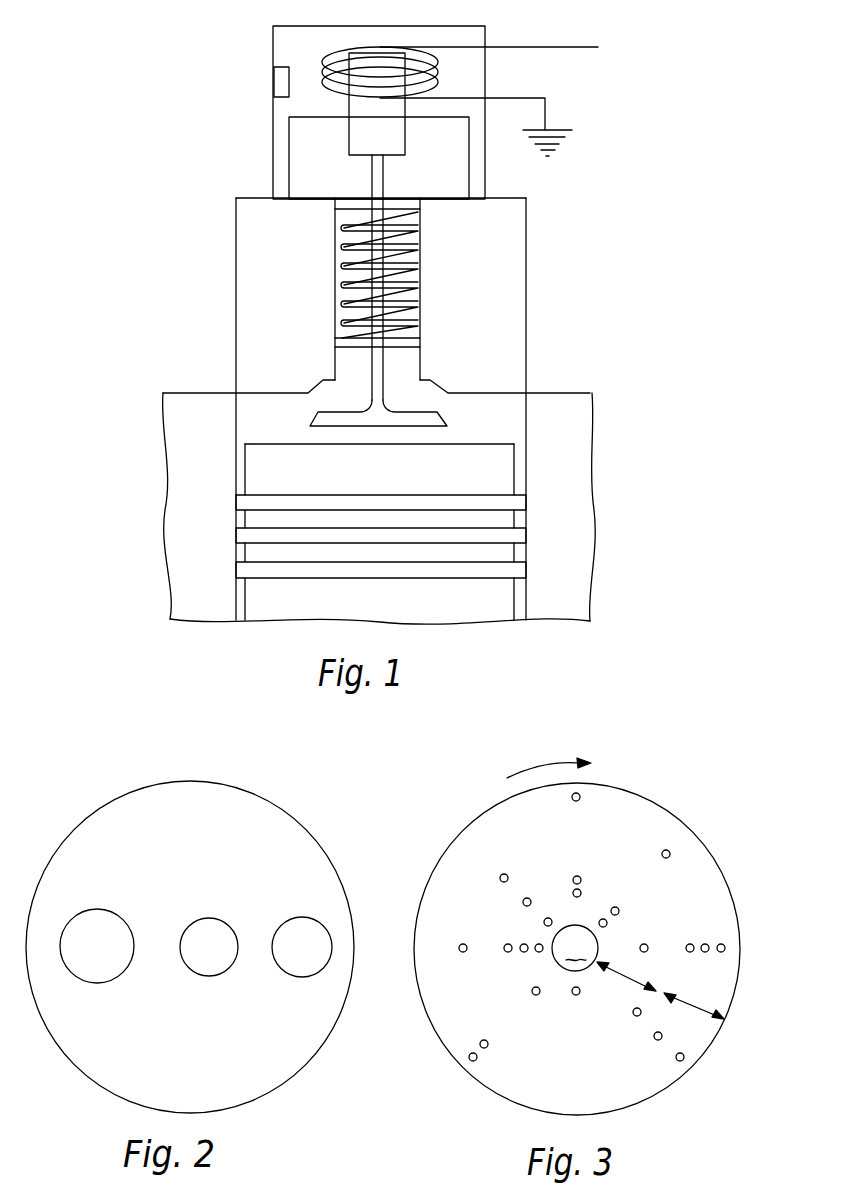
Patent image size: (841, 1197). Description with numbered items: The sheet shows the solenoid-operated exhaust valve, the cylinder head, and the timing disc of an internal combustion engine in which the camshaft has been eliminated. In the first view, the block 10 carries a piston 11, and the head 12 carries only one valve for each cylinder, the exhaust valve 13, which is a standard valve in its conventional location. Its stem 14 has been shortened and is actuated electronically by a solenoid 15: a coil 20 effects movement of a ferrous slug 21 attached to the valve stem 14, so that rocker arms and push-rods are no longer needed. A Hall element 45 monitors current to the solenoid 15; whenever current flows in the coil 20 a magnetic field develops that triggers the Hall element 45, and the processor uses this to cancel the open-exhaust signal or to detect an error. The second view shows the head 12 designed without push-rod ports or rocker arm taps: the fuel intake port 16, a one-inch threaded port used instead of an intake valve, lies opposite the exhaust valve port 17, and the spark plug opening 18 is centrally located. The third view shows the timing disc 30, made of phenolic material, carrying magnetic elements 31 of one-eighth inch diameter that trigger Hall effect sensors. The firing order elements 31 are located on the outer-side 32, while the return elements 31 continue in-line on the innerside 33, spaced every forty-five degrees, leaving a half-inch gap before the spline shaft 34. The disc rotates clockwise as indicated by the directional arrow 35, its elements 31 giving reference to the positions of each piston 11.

In FIG. 1, the block 10 is at (188, 507).
In FIG. 1, the piston 11 is at (318, 600).
In FIG. 1, the head 12 is at (250, 278).
In FIG. 2, the head 12 is at (118, 808).
In FIG. 1, the exhaust valve 13 is at (317, 415).
In FIG. 1, the valve stem 14 is at (353, 360).
In FIG. 1, the solenoid 15 is at (290, 48).
In FIG. 2, the fuel intake port 16 is at (297, 966).
In FIG. 2, the exhaust valve port 17 is at (112, 972).
In FIG. 2, the spark plug opening 18 is at (217, 965).
In FIG. 1, the coil 20 is at (463, 47).
In FIG. 1, the ferrous slug 21 is at (397, 127).
In FIG. 1, the Hall element 45 is at (282, 82).
In FIG. 3, the timing disc 30 is at (510, 1109).
In FIG. 3, the elements 31 is at (580, 793).
In FIG. 3, the outer-side 32 is at (697, 1002).
In FIG. 3, the innerside 33 is at (633, 973).
In FIG. 3, the spline shaft 34 is at (575, 948).
In FIG. 3, the directional arrow 35 is at (535, 765).